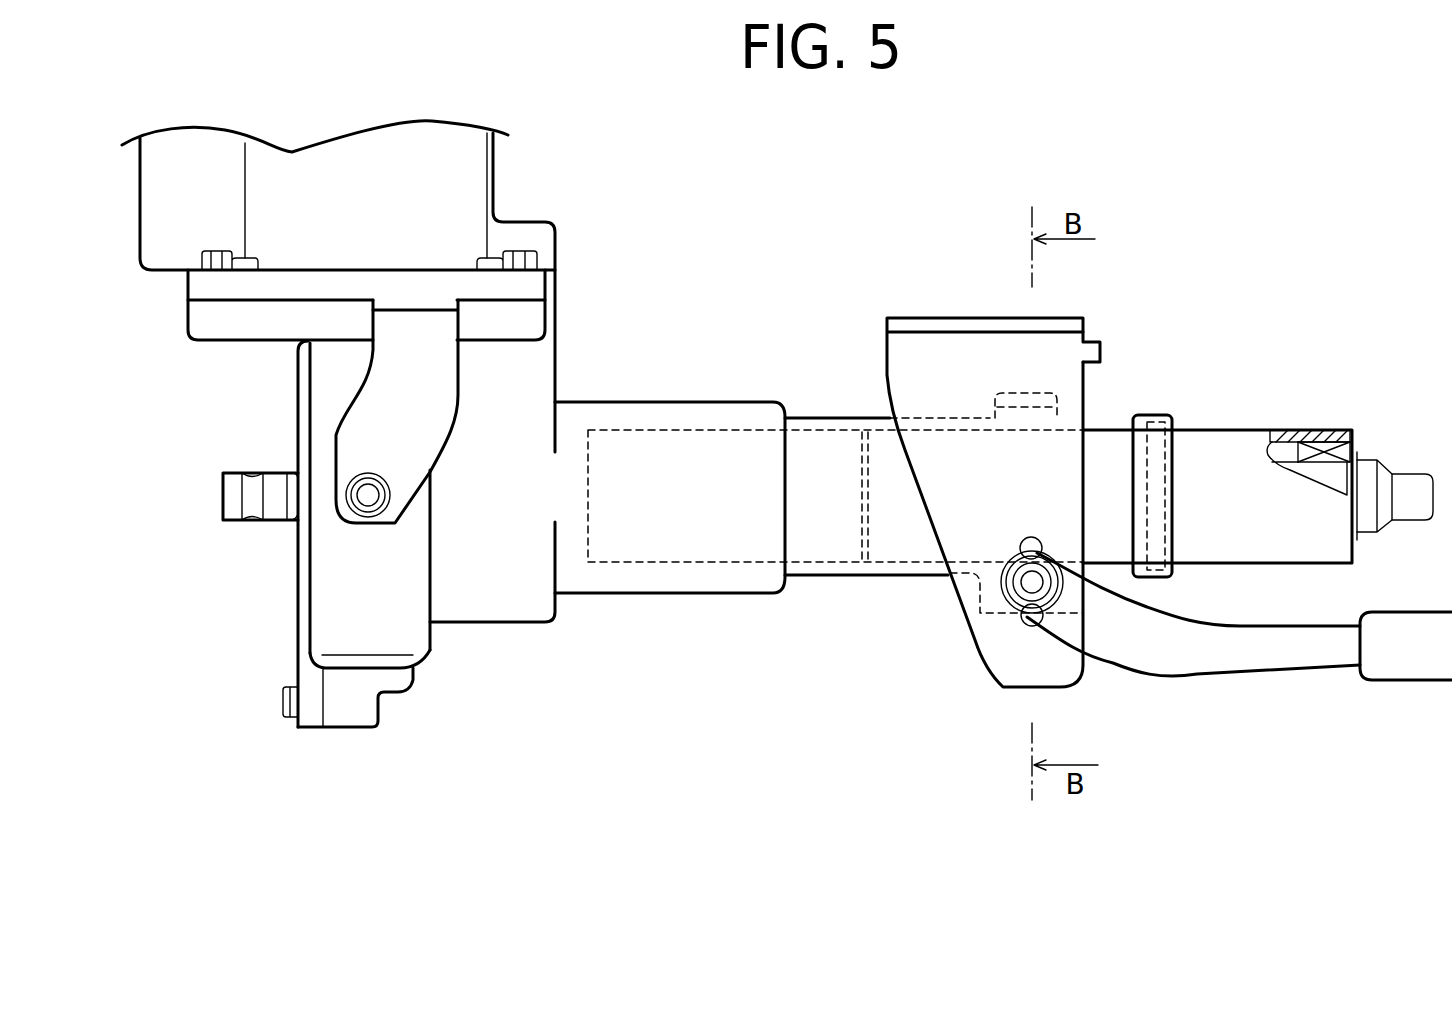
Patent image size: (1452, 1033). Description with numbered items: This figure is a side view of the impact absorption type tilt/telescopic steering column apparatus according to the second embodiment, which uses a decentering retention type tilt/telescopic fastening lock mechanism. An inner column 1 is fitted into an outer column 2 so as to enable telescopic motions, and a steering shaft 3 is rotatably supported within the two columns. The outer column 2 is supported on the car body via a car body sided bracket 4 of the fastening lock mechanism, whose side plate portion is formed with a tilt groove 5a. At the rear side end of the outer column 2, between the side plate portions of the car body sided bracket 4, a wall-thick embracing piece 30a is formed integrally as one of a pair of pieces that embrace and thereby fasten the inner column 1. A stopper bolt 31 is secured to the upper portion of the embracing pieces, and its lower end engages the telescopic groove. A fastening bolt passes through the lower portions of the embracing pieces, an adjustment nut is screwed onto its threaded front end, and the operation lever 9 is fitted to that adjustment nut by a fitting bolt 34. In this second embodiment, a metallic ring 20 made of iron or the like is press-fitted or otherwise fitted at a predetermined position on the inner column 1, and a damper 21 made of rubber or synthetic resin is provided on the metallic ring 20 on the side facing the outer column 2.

The inner column 1 is at (1262, 430).
The outer column 2 is at (825, 418).
The steering shaft 3 is at (1390, 460).
The car body sided bracket 4 is at (937, 318).
The tilt groove 5a is at (1027, 538).
The operation lever 9 is at (1188, 677).
The metallic ring 20 is at (1153, 422).
The damper 21 is at (1140, 414).
The embracing piece 30a is at (1066, 417).
The stopper bolt 31 is at (1023, 392).
The fitting bolt 34 is at (1030, 582).